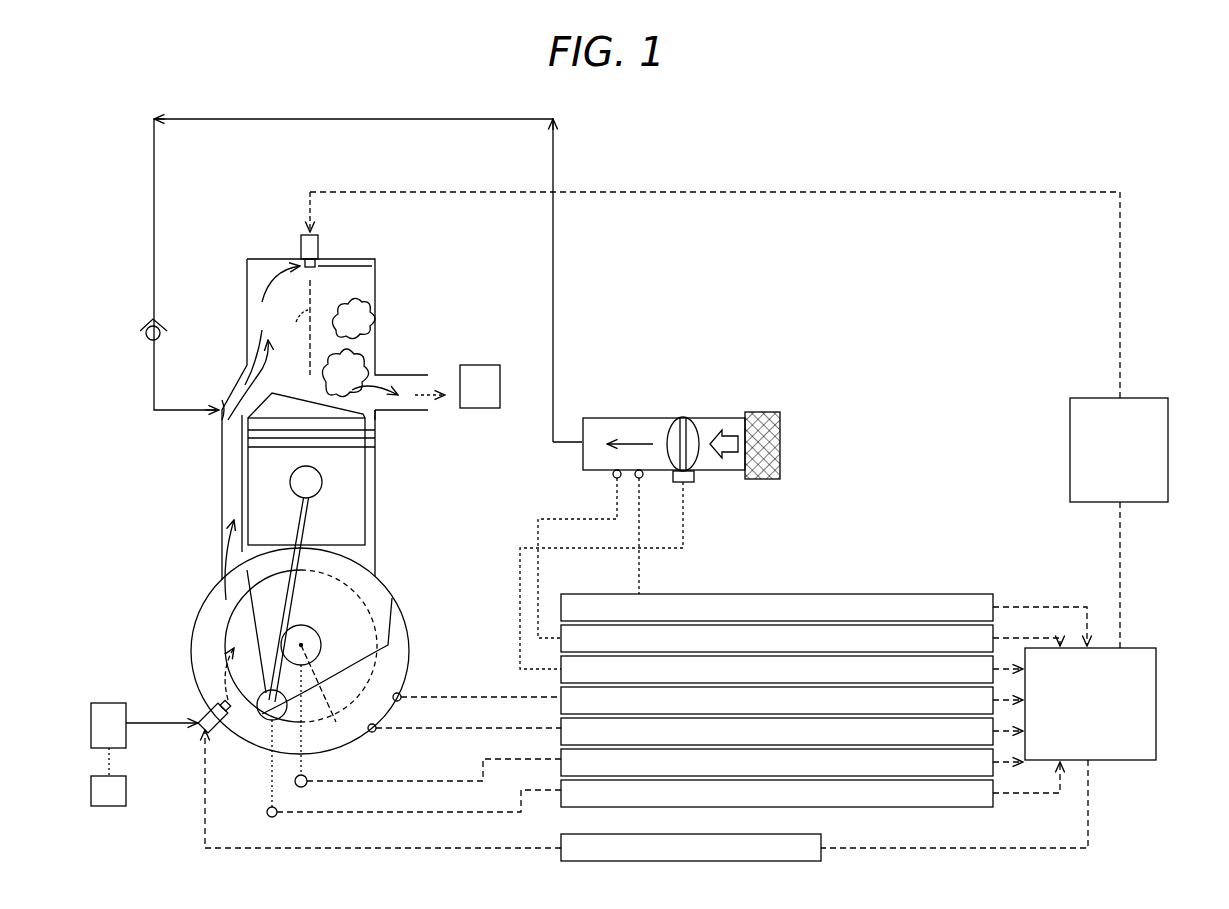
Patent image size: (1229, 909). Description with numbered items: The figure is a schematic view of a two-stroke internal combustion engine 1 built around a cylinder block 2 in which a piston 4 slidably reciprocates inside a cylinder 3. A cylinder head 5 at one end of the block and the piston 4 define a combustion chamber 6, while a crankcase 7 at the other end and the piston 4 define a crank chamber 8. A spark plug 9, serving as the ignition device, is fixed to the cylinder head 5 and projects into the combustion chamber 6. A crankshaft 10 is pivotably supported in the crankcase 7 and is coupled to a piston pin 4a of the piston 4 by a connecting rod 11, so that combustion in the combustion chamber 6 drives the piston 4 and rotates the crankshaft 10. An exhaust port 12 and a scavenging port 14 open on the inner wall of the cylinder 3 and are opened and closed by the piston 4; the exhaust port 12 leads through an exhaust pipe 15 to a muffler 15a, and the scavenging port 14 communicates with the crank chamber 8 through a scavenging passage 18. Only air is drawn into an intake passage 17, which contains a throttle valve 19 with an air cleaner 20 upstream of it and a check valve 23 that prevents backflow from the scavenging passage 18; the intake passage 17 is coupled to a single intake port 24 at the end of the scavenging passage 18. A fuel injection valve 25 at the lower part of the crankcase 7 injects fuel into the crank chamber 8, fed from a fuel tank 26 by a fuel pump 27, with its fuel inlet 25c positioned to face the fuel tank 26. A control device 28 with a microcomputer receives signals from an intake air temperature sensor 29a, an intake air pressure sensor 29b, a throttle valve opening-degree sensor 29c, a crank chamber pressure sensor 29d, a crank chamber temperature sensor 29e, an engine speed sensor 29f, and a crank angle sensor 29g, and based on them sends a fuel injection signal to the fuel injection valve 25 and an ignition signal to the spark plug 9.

The engine 1 is at (238, 258).
The cylinder block 2 is at (378, 292).
The cylinder 3 is at (377, 330).
The piston 4 is at (345, 497).
The piston pin 4a is at (312, 482).
The cylinder head 5 is at (265, 259).
The combustion chamber 6 is at (338, 276).
The crankcase 7 is at (405, 606).
The crank chamber 8 is at (254, 646).
The spark plug 9 is at (298, 248).
The crankshaft 10 is at (318, 637).
The connecting rod 11 is at (292, 600).
The exhaust port 12 is at (376, 414).
The scavenging port 14 is at (243, 373).
The exhaust pipe 15 is at (400, 376).
The muffler 15a is at (480, 364).
The intake passage 17 is at (440, 119).
The scavenging passage 18 is at (230, 482).
The throttle valve 19 is at (688, 426).
The air cleaner 20 is at (760, 410).
The check valve 23 is at (148, 340).
The intake port 24 is at (217, 410).
The fuel injection valve 25 is at (200, 704).
The fuel inlet 25c is at (196, 715).
The fuel tank 26 is at (91, 792).
The fuel pump 27 is at (91, 725).
The control device 28 is at (1160, 714).
The intake air temperature sensor 29a is at (640, 478).
The intake air pressure sensor 29b is at (613, 477).
The throttle valve opening-degree sensor 29c is at (692, 482).
The crank chamber pressure sensor 29d is at (401, 694).
The crank chamber temperature sensor 29e is at (372, 732).
The engine speed sensor 29f is at (306, 786).
The crank angle sensor 29g is at (269, 817).